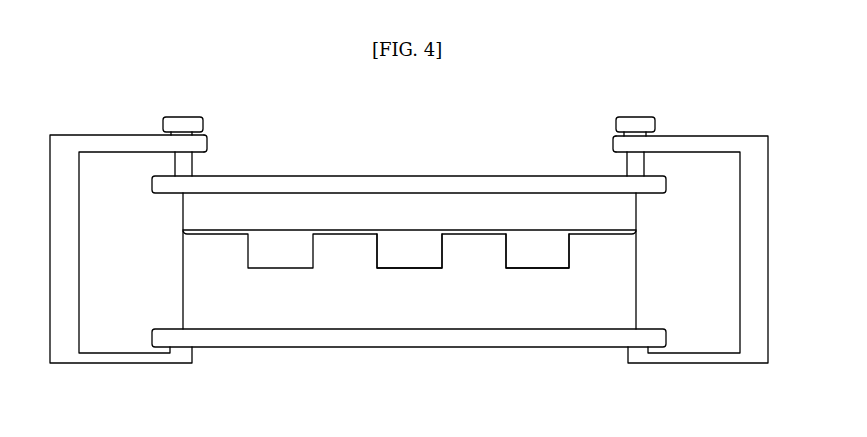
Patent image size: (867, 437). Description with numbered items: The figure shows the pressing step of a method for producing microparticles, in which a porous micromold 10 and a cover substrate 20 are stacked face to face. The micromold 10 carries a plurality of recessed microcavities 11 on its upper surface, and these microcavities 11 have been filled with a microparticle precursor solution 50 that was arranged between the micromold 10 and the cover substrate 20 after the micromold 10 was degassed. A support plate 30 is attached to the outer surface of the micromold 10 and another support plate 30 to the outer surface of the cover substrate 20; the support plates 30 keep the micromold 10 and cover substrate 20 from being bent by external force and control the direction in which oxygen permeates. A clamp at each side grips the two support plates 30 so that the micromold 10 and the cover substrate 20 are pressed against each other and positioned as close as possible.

The porous micromold 10 is at (637, 272).
The microcavities 11 is at (506, 246).
The cover substrate 20 is at (637, 216).
The support plate 30 is at (667, 183).
The microparticle precursor solution 50 is at (408, 260).
The element clamp is at (207, 141).